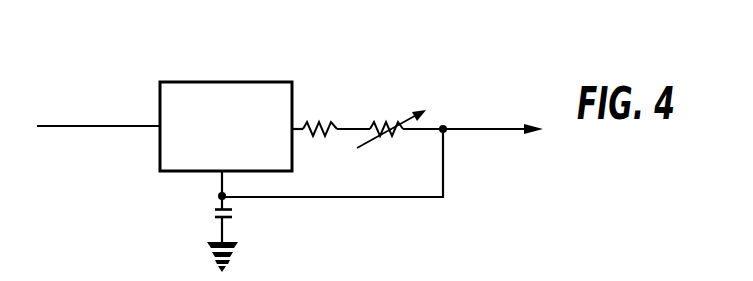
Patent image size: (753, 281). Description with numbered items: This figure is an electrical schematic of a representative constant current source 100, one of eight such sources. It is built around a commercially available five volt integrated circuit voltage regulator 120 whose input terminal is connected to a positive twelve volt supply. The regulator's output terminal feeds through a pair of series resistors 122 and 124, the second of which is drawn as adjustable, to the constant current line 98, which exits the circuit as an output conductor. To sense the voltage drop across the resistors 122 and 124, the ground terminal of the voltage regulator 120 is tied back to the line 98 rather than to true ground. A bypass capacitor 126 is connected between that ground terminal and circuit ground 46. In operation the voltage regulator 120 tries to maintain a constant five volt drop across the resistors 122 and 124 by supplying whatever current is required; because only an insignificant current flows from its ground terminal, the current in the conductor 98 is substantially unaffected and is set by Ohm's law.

The constant current source 100 is at (120, 175).
The voltage regulator 120 is at (170, 60).
The resistor 122 is at (310, 124).
The resistor 124 is at (377, 124).
The constant current line 98 is at (474, 132).
The bypass capacitor 126 is at (232, 210).
The circuit ground 46 is at (207, 243).